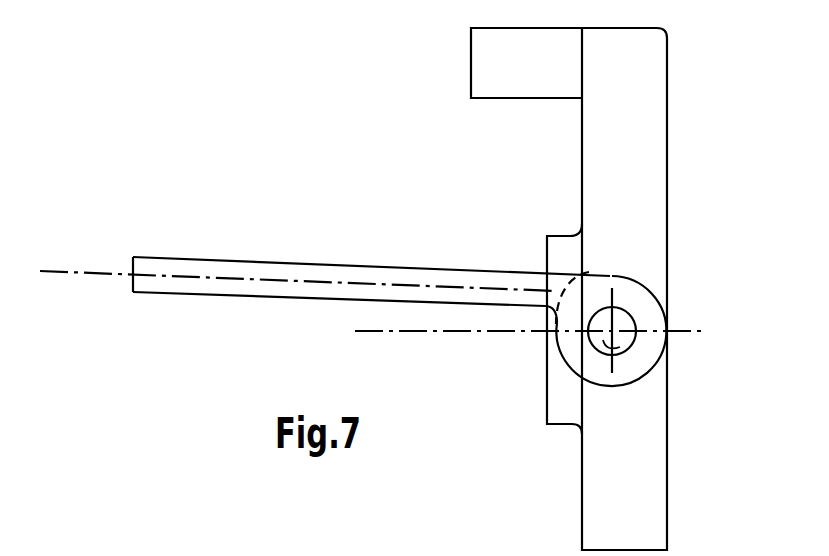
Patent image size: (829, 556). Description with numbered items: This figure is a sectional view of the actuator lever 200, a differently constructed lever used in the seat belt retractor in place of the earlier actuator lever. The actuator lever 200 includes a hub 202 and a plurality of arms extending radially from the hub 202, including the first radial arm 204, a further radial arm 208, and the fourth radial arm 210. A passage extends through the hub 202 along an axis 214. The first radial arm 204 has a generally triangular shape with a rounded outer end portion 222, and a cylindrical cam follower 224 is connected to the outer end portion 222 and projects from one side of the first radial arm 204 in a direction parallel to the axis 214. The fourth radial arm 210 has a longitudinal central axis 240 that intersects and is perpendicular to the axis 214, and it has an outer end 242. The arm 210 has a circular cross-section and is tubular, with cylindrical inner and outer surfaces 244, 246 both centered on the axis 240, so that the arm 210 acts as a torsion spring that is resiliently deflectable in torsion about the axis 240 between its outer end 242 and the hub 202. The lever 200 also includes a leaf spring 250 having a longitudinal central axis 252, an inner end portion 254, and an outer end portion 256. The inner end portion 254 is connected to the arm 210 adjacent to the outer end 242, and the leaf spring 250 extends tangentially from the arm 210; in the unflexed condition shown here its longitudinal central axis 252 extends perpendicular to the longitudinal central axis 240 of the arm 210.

The actuator lever 200 is at (294, 61).
The hub 202 is at (565, 243).
The first radial arm 204 is at (582, 135).
The radial arm 208 is at (639, 528).
The fourth radial arm 210 is at (627, 277).
The axis 214 is at (695, 330).
The rounded outer end portion 222 is at (628, 45).
The cylindrical cam follower 224 is at (490, 54).
The longitudinal central axis 240 is at (616, 340).
The outer end 242 is at (640, 310).
The cylindrical inner surface 244 is at (584, 378).
The cylindrical outer surface 246 is at (560, 357).
The leaf spring 250 is at (357, 266).
The longitudinal central axis 252 is at (128, 272).
The inner end portion 254 is at (583, 277).
The outer end portion 256 is at (186, 256).